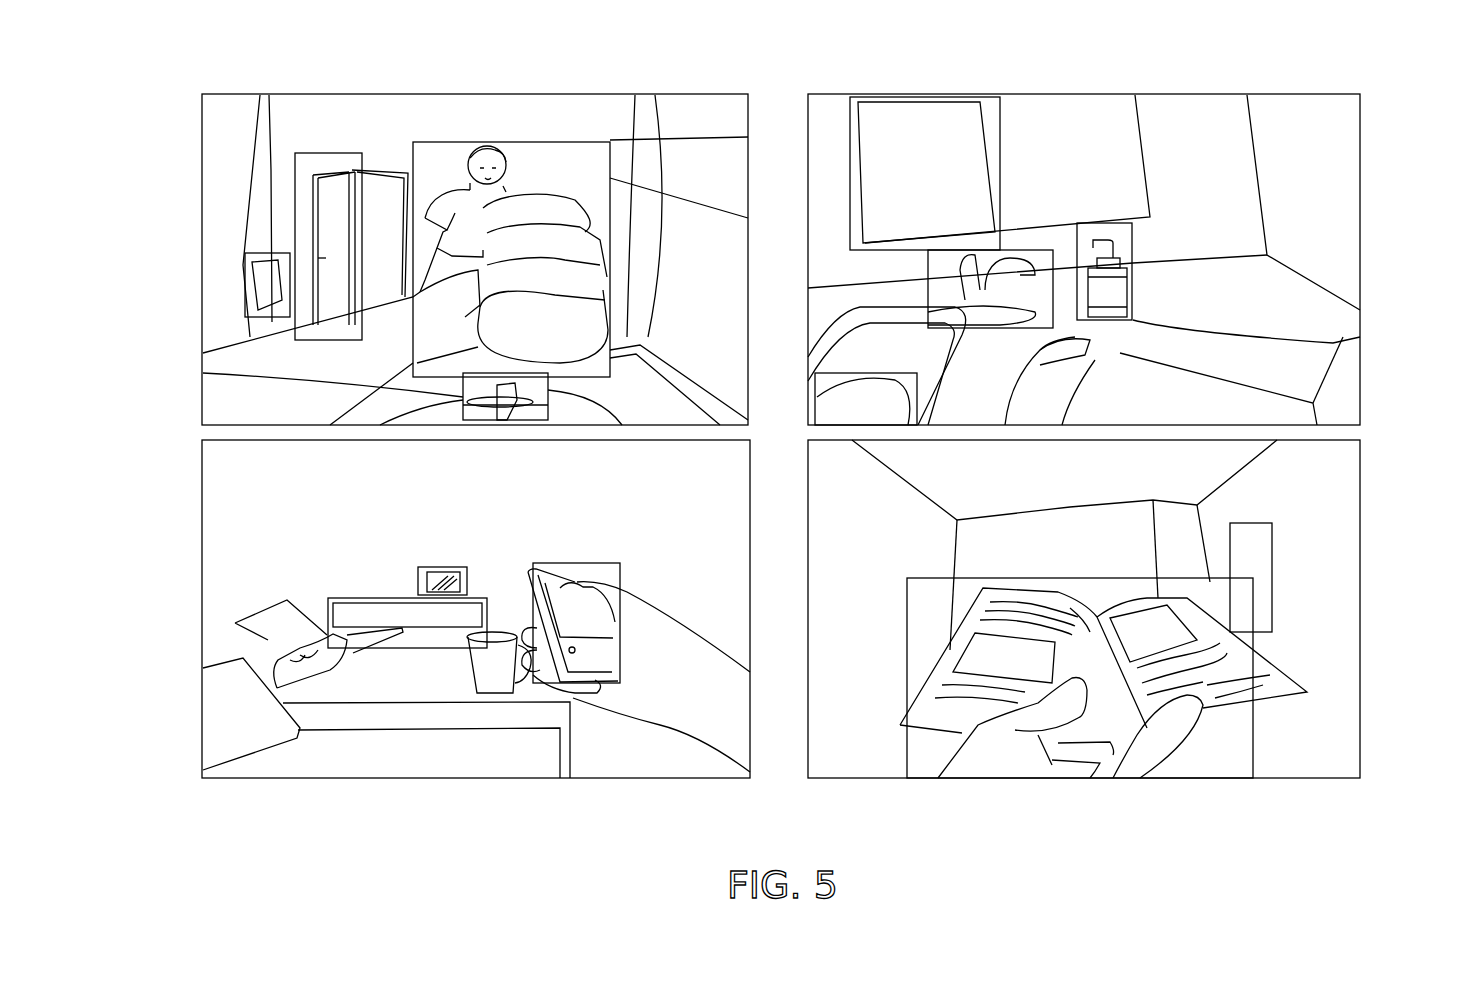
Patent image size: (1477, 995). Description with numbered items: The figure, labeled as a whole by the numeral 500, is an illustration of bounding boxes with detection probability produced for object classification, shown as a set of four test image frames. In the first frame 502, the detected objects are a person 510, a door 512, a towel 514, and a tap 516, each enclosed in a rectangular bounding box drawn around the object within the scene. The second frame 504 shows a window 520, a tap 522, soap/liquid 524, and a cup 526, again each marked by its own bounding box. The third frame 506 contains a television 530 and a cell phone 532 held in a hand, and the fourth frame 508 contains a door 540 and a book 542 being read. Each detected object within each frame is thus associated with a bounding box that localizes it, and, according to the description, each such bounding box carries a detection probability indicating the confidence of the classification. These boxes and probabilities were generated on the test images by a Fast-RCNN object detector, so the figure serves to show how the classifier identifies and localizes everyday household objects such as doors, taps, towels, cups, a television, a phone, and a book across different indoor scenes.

The set of example environments 500 is at (785, 440).
The frame 502 is at (426, 225).
The frame 504 is at (1137, 238).
The frame 506 is at (427, 609).
The frame 508 is at (1137, 609).
The person 510 is at (478, 130).
The door 512 is at (321, 140).
The towel 514 is at (268, 245).
The tap 516 is at (446, 396).
The window 520 is at (915, 87).
The tap 522 is at (1015, 238).
The soap/liquid 524 is at (1120, 206).
The cup 526 is at (867, 356).
The television 530 is at (441, 547).
The cell phone 532 is at (579, 534).
The door 540 is at (1263, 512).
The book 542 is at (1105, 559).